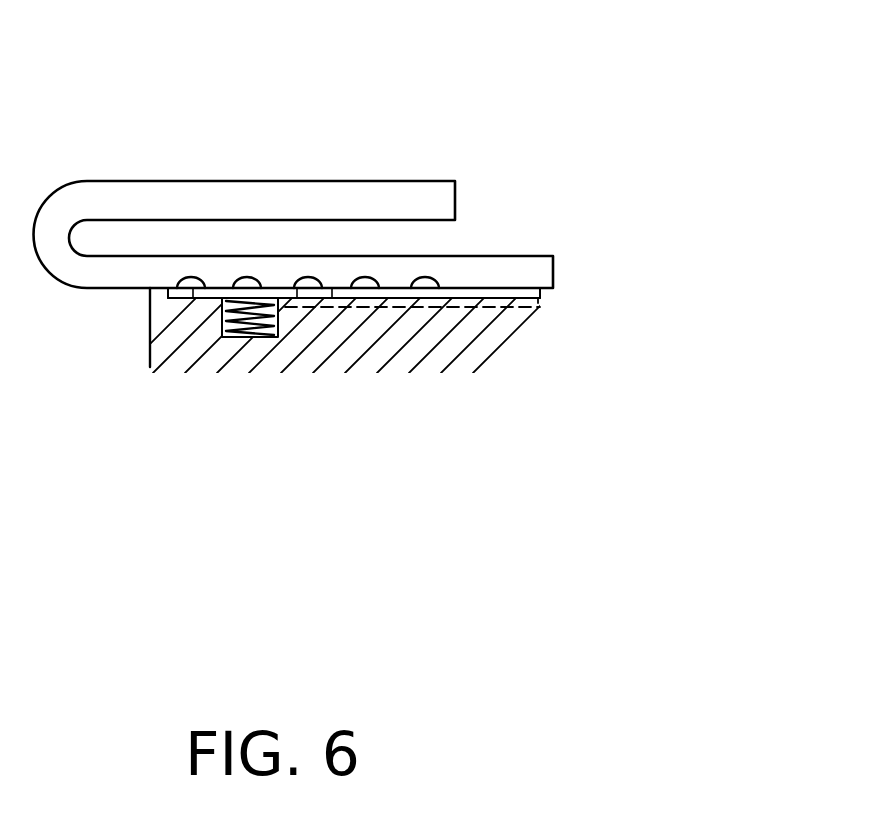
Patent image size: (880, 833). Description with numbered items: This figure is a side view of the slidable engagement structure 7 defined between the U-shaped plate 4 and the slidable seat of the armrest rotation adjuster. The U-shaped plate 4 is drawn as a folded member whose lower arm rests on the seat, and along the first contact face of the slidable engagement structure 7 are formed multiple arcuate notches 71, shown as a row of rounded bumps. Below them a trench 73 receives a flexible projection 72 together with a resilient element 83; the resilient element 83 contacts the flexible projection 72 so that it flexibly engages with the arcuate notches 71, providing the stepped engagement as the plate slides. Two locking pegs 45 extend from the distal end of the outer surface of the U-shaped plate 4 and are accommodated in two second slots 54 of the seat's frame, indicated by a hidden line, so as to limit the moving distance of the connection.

The U-shaped plate 4 is at (238, 182).
The slidable engagement structure 7 is at (218, 268).
The arcuate notches 71 is at (308, 277).
The flexible projection 72 is at (247, 275).
The trench 73 is at (202, 298).
The resilient element 83 is at (245, 337).
The locking pegs 45 is at (513, 300).
The second slots 54 is at (430, 310).